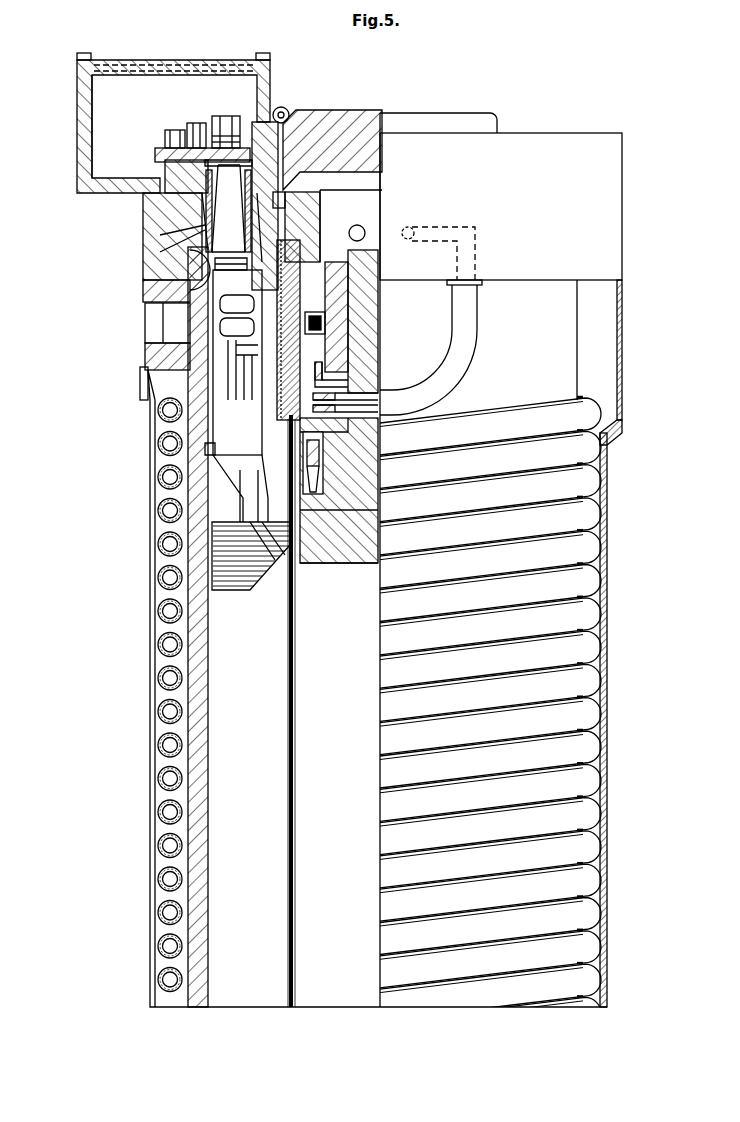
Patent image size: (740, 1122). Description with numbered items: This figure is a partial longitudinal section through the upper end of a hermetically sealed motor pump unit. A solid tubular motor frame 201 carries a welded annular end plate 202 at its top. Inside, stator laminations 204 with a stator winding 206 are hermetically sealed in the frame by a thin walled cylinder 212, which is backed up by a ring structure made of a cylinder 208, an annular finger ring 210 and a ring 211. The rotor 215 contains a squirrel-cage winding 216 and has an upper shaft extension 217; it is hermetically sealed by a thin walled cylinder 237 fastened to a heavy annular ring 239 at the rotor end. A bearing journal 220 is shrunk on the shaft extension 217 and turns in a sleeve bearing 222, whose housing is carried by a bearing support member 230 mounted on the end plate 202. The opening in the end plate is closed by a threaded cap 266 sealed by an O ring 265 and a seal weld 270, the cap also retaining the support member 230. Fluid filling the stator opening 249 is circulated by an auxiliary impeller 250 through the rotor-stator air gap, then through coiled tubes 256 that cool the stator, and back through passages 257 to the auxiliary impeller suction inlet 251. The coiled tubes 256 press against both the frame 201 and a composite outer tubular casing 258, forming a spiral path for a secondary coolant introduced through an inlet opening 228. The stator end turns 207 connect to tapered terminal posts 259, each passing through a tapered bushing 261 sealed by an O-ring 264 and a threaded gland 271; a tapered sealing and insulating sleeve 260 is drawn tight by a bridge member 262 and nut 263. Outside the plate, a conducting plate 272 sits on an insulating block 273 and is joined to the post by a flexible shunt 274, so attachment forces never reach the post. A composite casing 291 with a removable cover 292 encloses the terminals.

The motor frame 201 is at (190, 786).
The annular end plate 202 is at (150, 275).
The stator laminations 204 is at (262, 632).
The stator winding 206 is at (302, 575).
The stator end turns 207 is at (212, 450).
The cylinder 208 is at (270, 455).
The annular finger ring 210 is at (212, 492).
The ring 211 is at (320, 482).
The thin walled cylinder 212 is at (290, 611).
The rotor 215 is at (362, 556).
The squirrel-cage winding 216 is at (312, 536).
The shaft extension 217 is at (356, 366).
The bearing journal 220 is at (345, 336).
The sleeve bearing 222 is at (330, 320).
The inlet opening 228 is at (150, 329).
The bearing support member 230 is at (322, 232).
The thin walled cylinder 237 is at (305, 518).
The heavy annular ring 239 is at (336, 450).
The stator opening 249 is at (294, 706).
The auxiliary impeller 250 is at (376, 404).
The auxiliary impeller suction inlet 251 is at (374, 385).
The coiled tubes 256 is at (478, 343).
The passages 257 is at (477, 242).
The composite outer tubular casing 258 is at (152, 716).
The tapered terminal post 259 is at (196, 250).
The tapered sealing and insulating sleeve 260 is at (205, 235).
The tapered bushing 261 is at (205, 226).
The bridge member 262 is at (256, 160).
The nut 263 is at (250, 148).
The O-ring 264 is at (150, 213).
The O ring 265 is at (305, 113).
The threaded cap 266 is at (354, 122).
The seal weld 270 is at (282, 107).
The threaded gland 271 is at (165, 180).
The plate 272 is at (165, 146).
The block 273 is at (160, 162).
The flexible shunt 274 is at (208, 128).
The composite casing 291 is at (77, 80).
The removable cover 292 is at (112, 66).